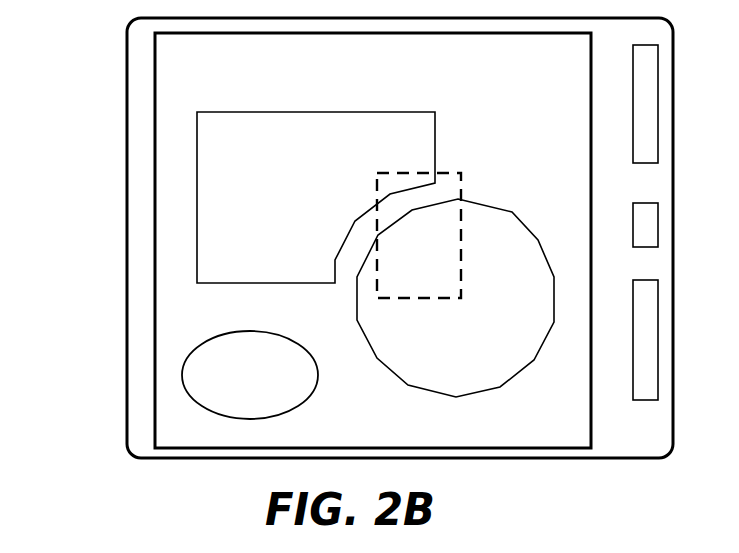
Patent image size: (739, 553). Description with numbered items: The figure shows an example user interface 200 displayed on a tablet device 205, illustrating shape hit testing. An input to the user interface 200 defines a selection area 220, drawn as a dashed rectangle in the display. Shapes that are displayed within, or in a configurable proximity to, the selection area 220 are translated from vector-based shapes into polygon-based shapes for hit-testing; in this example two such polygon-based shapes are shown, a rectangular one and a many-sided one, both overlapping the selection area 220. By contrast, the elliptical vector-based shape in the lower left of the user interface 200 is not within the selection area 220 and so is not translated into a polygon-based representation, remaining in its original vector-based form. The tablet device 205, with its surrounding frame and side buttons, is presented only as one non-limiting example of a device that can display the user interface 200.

The user interface 200 is at (367, 62).
The tablet device 205 is at (133, 84).
The selection area 220 is at (395, 172).